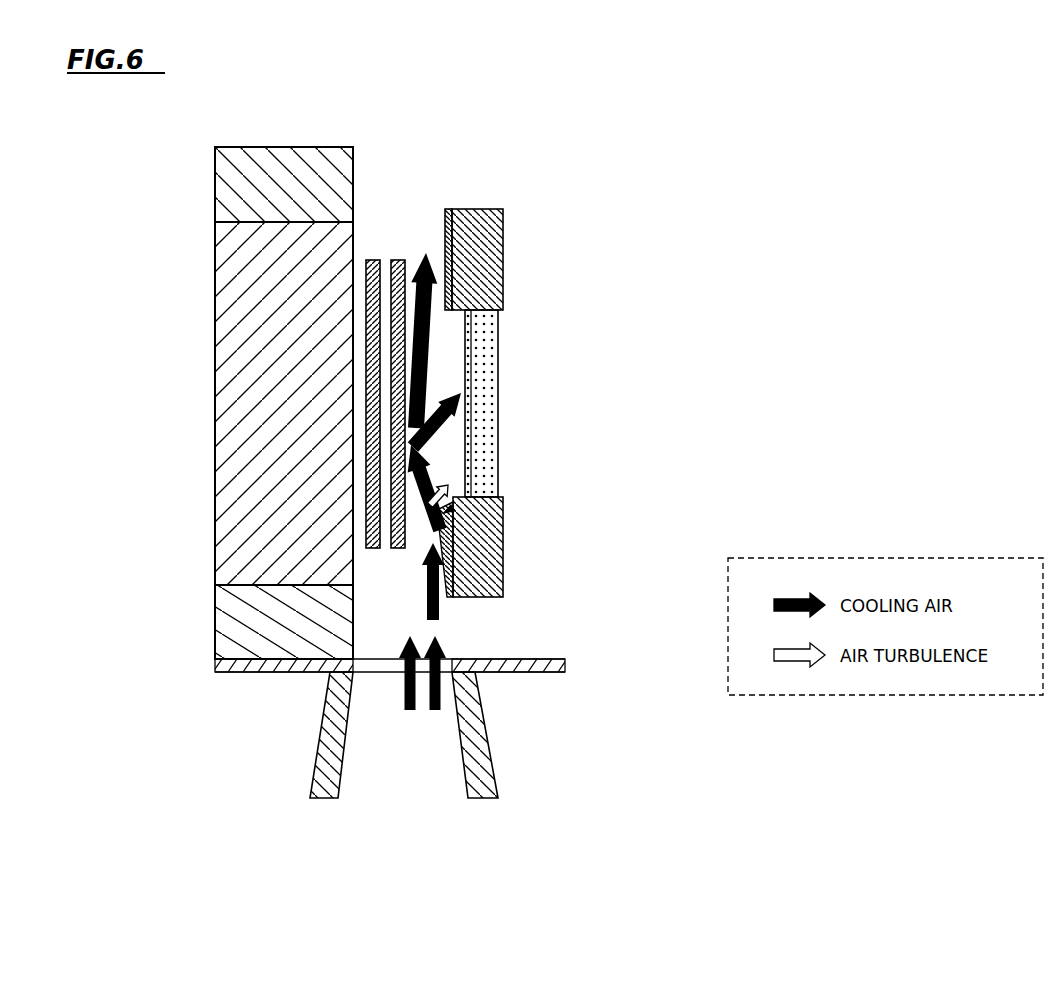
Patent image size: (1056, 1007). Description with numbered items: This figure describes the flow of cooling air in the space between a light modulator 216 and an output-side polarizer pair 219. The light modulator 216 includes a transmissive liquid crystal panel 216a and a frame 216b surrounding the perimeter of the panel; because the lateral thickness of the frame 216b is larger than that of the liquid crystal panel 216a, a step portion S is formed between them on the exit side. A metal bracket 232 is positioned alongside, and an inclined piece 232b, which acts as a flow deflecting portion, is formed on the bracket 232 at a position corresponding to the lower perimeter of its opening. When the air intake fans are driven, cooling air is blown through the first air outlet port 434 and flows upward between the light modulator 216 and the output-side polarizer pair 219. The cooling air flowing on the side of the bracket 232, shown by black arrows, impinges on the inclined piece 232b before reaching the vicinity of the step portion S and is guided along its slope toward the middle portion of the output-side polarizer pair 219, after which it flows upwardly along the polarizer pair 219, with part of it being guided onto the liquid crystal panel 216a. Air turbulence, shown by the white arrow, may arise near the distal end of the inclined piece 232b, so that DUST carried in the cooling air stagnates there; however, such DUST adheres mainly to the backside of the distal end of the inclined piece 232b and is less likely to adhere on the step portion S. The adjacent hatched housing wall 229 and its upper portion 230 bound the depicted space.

The housing upper portion 230 is at (240, 183).
The housing wall 229 is at (228, 323).
The output-side polarizer pair 219 is at (398, 258).
The light modulator 216 is at (528, 328).
The frame 216b is at (503, 268).
The liquid crystal panel 216a is at (498, 365).
The bracket 232 is at (518, 527).
The inclined piece 232b is at (453, 512).
The first air outlet port 434 is at (480, 757).
The step portion S is at (453, 500).
The dust DUST is at (452, 482).